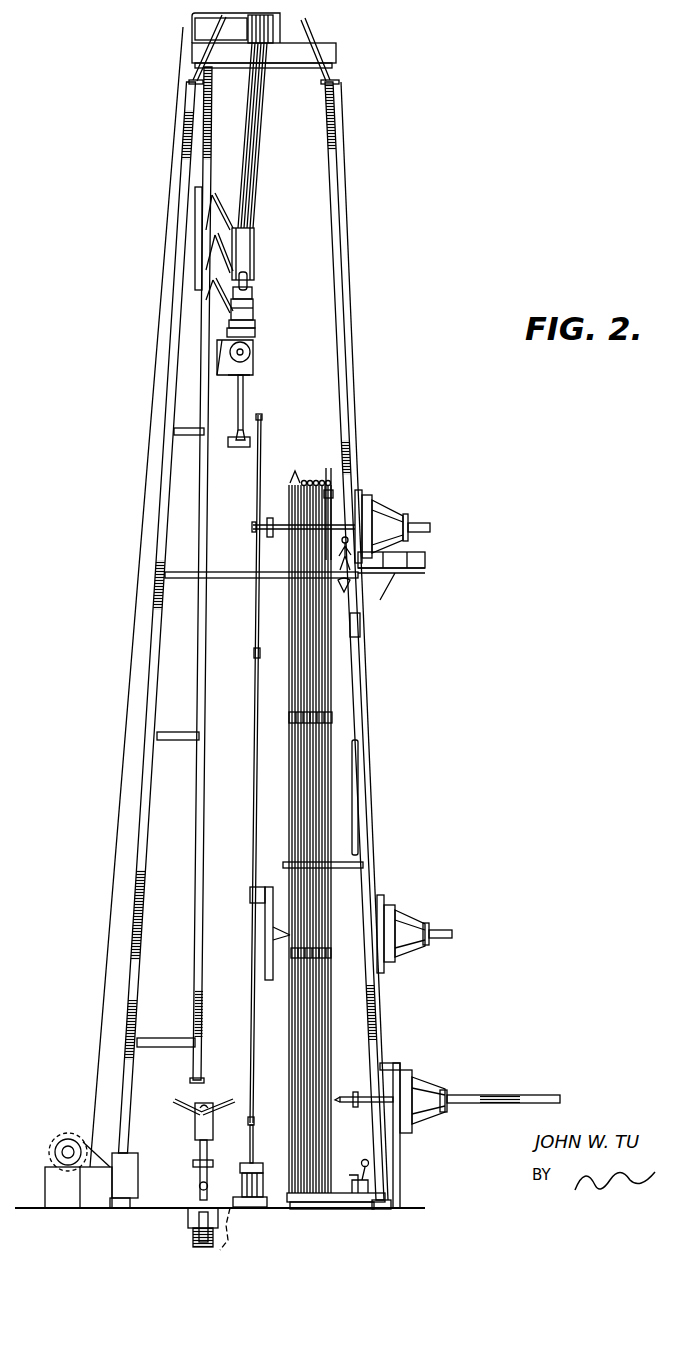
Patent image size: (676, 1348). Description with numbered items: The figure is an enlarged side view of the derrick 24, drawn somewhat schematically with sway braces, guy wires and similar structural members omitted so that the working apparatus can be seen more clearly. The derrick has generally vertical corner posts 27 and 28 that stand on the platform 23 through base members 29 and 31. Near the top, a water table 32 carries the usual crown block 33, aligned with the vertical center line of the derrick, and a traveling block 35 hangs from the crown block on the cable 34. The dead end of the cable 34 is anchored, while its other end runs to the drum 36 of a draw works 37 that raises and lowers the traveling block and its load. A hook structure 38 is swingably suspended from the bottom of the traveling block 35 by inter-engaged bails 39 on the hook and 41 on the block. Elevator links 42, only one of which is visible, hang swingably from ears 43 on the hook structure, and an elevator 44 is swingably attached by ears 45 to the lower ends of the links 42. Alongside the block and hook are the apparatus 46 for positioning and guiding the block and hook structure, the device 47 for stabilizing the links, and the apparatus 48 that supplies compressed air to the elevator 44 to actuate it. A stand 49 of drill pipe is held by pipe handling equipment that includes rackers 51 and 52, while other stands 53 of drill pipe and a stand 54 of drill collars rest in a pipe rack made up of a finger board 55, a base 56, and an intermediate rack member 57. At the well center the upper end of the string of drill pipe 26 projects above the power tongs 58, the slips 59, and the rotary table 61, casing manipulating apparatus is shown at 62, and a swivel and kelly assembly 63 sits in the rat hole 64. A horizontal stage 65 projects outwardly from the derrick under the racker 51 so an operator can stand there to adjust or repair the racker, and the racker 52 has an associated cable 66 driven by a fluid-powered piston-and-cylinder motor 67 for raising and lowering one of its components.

The platform 23 is at (427, 1206).
The derrick 24 is at (387, 206).
The string of drill pipe 26 is at (254, 1150).
The corner post 27 is at (376, 1012).
The corner post 28 is at (146, 906).
The base member 29 is at (383, 1207).
The base member 31 is at (118, 1208).
The water table 32 is at (337, 53).
The crown block 33 is at (278, 30).
The cable 34 is at (262, 140).
The traveling block 35 is at (273, 229).
The drum 36 is at (62, 1130).
The draw works 37 is at (33, 1168).
The hook structure 38 is at (283, 312).
The bail 39 is at (252, 292).
The bail 41 is at (248, 282).
The elevator link 42 is at (266, 393).
The ear 43 is at (256, 341).
The elevator 44 is at (230, 426).
The ear 45 is at (240, 446).
The positioning and guiding apparatus 46 is at (194, 243).
The link stabilizing device 47 is at (204, 362).
The compressed air supply apparatus 48 is at (206, 332).
The stand of drill pipe 49 is at (245, 622).
The racker 51 is at (395, 491).
The racker 52 is at (462, 896).
The stands of drill pipe 53 is at (299, 469).
The stand of drill collars 54 is at (327, 468).
The finger board 55 is at (284, 559).
The base 56 is at (313, 1205).
The intermediate rack member 57 is at (348, 878).
The power tongs 58 is at (263, 1166).
The slips 59 is at (241, 1196).
The rotary table 61 is at (258, 1207).
The casing manipulating apparatus 62 is at (460, 1058).
The swivel and kelly assembly 63 is at (189, 1153).
The rat hole 64 is at (192, 1226).
The horizontal stage 65 is at (426, 588).
The cable 66 is at (262, 890).
The fluid-powered piston-and-cylinder motor 67 is at (359, 786).